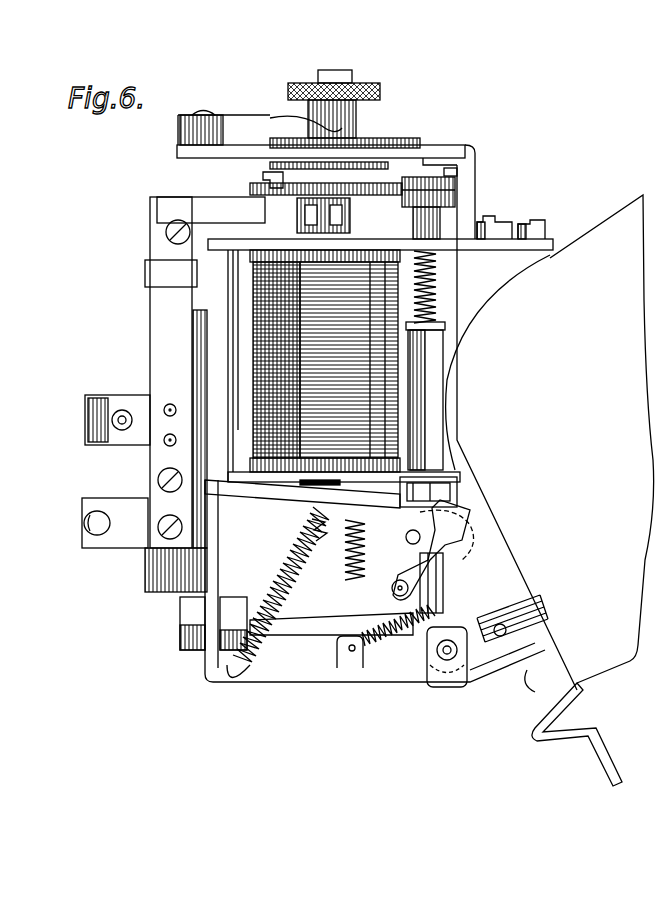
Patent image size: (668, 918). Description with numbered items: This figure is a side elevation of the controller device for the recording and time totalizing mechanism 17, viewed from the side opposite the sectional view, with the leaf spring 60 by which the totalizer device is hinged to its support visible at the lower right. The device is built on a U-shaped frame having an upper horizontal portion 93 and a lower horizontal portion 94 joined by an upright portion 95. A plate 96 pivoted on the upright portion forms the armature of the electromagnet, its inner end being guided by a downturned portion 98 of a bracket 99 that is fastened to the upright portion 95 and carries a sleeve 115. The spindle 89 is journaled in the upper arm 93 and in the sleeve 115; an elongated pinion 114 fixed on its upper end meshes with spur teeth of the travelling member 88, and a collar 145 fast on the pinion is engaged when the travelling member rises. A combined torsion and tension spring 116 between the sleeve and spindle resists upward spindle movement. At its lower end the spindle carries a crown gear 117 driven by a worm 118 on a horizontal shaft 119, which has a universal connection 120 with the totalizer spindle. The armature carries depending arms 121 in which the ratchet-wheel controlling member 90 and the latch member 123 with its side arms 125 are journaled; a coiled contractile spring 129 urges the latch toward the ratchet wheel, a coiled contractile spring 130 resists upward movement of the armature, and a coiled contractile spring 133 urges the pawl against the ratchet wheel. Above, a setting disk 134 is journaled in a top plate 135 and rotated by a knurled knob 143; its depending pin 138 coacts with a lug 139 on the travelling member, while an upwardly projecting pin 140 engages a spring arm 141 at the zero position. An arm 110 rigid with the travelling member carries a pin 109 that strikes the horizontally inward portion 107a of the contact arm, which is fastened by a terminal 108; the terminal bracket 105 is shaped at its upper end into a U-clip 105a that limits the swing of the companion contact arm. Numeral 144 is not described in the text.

The adjusting knob 144 is at (352, 76).
The knurled knob 143 is at (345, 127).
The spring arm 141 is at (227, 113).
The pin 140 is at (224, 114).
The disk 134 is at (392, 147).
The top plate 135 is at (452, 160).
The collar 145 is at (458, 176).
The lug 139 is at (264, 178).
The depending pin 138 is at (258, 190).
The elongated pinion 114 is at (453, 205).
The spindle 89 is at (441, 224).
The travelling member 88 is at (370, 199).
The horizontally inwardly extending portion of arm 107a is at (206, 198).
The upper horizontal portion of frame 93 is at (550, 245).
The pin 109 is at (254, 219).
The arm 110 is at (287, 215).
The combined torsion and tension spring 116 is at (440, 290).
The sleeve 115 is at (425, 365).
The bracket 99 is at (430, 458).
The downturned portion 98 is at (456, 494).
The plate (armature) 96 is at (286, 496).
The depending arms 121 is at (460, 522).
The controlling member 90 is at (455, 553).
The coiled contractile spring 129 is at (385, 592).
The crown gear 117 is at (443, 590).
The coiled contractile spring 130 is at (288, 565).
The side portions or arms of latch member 125 is at (350, 577).
The latch member 123 is at (336, 561).
The horizontal shaft 119 is at (328, 634).
The coiled contractile spring 133 is at (378, 645).
The worm 118 is at (440, 665).
The lower horizontal portion of frame 94 is at (298, 676).
The universal connection 120 is at (537, 621).
The upright portion of frame 95 is at (162, 332).
The U-clip 105a is at (147, 276).
The terminal 108 is at (96, 418).
The terminal bracket 105 is at (107, 548).
The time totalizing mechanism 17 is at (602, 439).
The leaf spring 60 is at (558, 735).